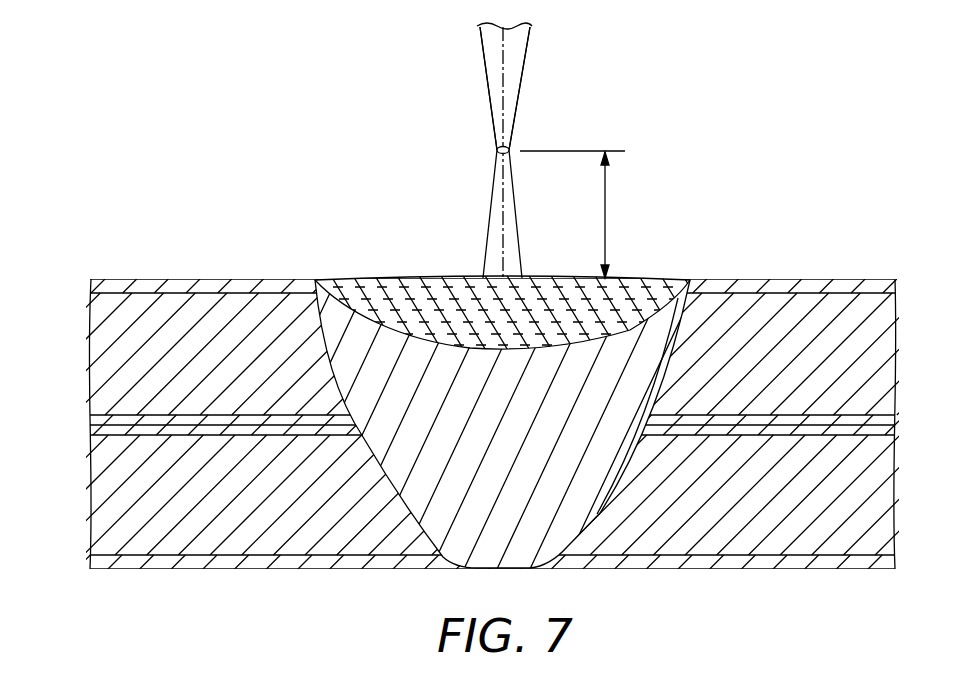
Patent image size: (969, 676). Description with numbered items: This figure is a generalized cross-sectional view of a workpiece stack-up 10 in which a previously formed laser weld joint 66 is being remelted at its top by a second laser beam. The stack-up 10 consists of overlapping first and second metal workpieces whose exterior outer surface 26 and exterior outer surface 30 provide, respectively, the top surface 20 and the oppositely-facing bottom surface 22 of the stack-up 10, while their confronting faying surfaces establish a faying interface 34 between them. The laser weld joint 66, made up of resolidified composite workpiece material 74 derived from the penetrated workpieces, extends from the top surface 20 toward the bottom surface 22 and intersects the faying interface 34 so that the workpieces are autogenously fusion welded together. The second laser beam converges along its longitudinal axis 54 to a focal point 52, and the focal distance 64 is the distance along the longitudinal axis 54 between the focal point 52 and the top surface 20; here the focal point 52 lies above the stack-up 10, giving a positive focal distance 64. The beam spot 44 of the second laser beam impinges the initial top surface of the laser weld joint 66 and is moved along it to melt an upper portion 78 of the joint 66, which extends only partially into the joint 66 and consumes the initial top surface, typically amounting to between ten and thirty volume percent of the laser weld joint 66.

The workpiece stack-up 10 is at (62, 314).
The top surface 20 is at (808, 268).
The bottom surface 22 is at (713, 583).
The exterior outer surface 26 is at (855, 278).
The exterior outer surface 30 is at (782, 571).
The faying interface 34 is at (201, 440).
The beam spot 44 is at (507, 273).
The focal point 52 is at (508, 144).
The longitudinal axis 54 is at (503, 63).
The focal distance 64 is at (572, 214).
The laser weld joint 66 is at (684, 254).
The resolidified composite workpiece material 74 is at (645, 360).
The upper portion 78 is at (380, 288).